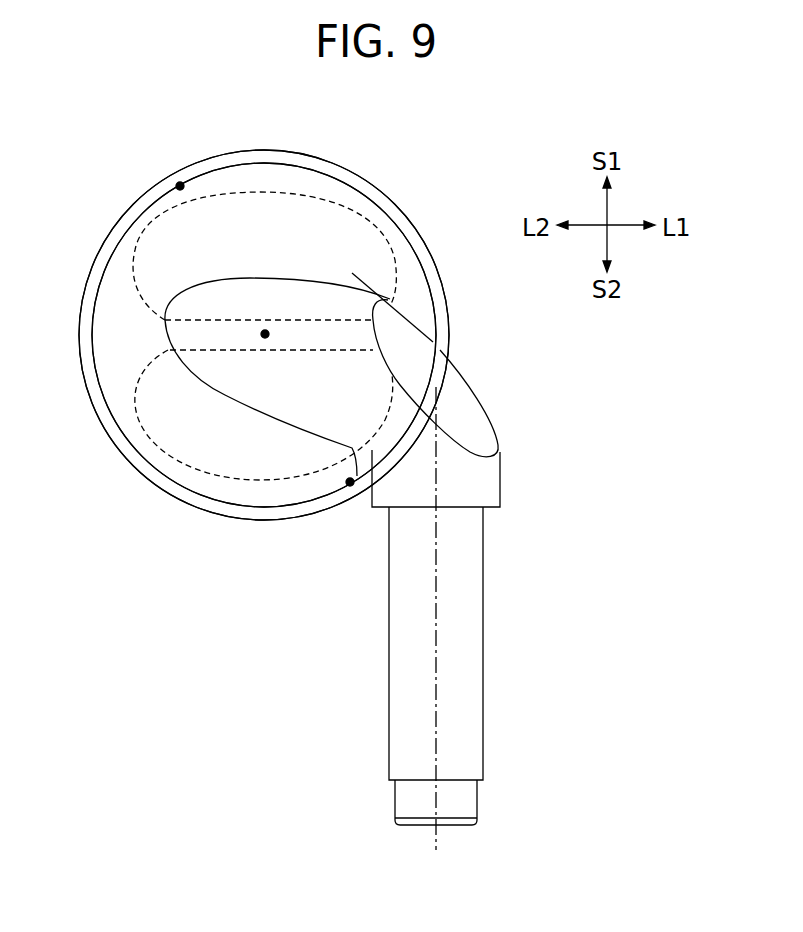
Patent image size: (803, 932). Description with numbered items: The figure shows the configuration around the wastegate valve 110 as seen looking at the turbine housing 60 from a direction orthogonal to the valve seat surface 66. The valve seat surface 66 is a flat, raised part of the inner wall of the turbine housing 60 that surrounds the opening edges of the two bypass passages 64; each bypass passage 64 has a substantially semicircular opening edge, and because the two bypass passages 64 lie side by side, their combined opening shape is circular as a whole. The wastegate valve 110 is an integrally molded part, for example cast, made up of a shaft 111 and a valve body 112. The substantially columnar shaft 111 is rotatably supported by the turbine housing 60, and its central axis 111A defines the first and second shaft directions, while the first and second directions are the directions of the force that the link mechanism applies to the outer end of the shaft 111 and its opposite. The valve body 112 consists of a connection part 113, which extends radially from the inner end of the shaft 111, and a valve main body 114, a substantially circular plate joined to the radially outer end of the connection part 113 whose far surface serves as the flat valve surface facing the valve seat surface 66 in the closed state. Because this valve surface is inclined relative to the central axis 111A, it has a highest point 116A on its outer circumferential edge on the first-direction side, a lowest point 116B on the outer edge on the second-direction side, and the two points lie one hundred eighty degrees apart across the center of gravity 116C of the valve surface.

The turbine housing 60 is at (250, 520).
The bypass passage 64 is at (267, 194).
The valve seat surface 66 is at (113, 427).
The wastegate valve 110 is at (484, 699).
The shaft 111 is at (484, 597).
The central axis of the shaft 111A is at (434, 660).
The valve body 112 is at (483, 412).
The connection part 113 is at (462, 382).
The valve main body 114 is at (338, 180).
The highest point 116A is at (178, 183).
The lowest point 116B is at (351, 486).
The center of gravity of the valve surface 116C is at (269, 334).